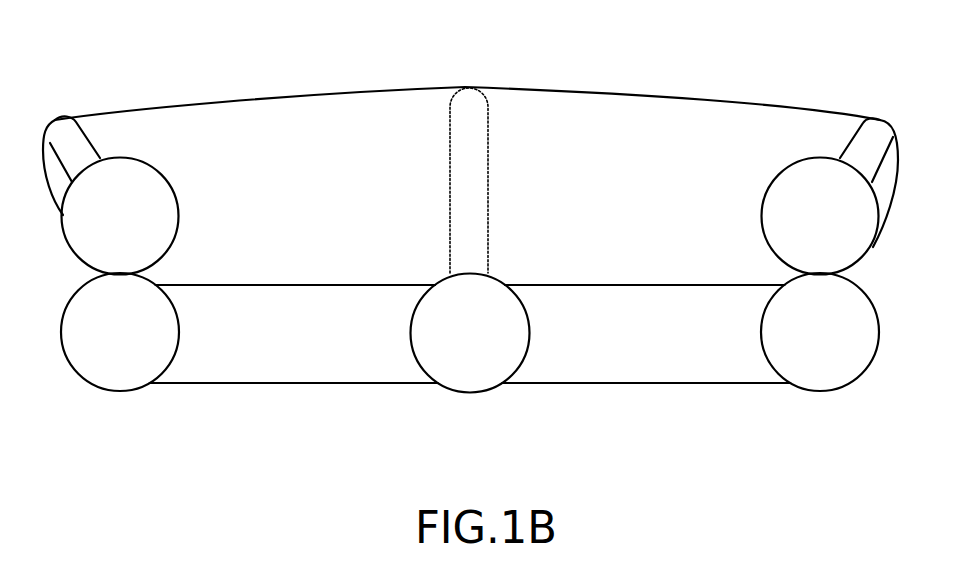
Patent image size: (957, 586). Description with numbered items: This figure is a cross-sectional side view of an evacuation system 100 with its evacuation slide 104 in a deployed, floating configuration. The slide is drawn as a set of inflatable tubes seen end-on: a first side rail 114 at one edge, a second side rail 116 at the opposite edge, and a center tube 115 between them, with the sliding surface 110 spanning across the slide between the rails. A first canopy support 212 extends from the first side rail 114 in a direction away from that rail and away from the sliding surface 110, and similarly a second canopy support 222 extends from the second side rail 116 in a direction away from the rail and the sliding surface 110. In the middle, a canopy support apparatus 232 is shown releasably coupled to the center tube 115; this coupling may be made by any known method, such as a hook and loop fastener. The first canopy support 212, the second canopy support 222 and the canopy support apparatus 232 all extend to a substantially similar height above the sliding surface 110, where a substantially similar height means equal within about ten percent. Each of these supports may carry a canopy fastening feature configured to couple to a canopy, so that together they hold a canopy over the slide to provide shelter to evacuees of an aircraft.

The evacuation system 100 is at (461, 283).
The evacuation slide 104 is at (305, 358).
The sliding surface 110 is at (283, 285).
The first side rail 114 is at (120, 170).
The center tube 115 is at (448, 372).
The second side rail 116 is at (833, 202).
The first canopy support 212 is at (67, 158).
The second canopy support 222 is at (872, 147).
The canopy support apparatus 232 is at (477, 177).